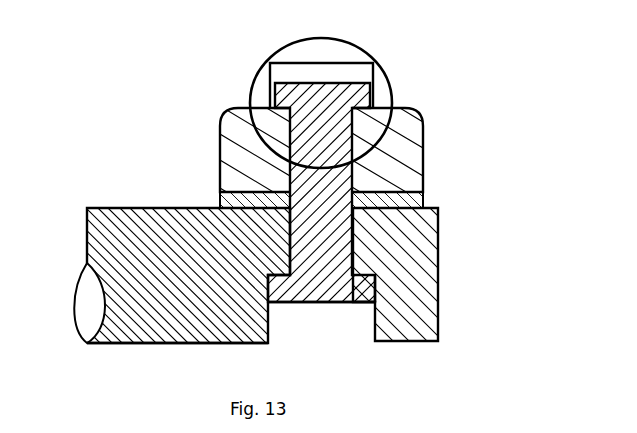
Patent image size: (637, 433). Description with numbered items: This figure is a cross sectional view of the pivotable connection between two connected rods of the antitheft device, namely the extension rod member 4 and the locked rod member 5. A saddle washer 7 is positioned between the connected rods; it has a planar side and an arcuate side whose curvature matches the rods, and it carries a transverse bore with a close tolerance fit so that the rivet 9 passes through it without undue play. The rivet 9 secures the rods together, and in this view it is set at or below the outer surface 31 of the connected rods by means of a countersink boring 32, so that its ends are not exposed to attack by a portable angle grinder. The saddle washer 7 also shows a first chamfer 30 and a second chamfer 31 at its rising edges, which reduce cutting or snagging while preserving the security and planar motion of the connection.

The extension rod member 4 is at (256, 100).
The locked rod member 5 is at (438, 260).
The saddle washer 7 is at (218, 196).
The rivet 9 is at (341, 303).
The first chamfer 30 is at (413, 109).
The outer surface 31 is at (228, 343).
The countersink boring 32 is at (342, 70).